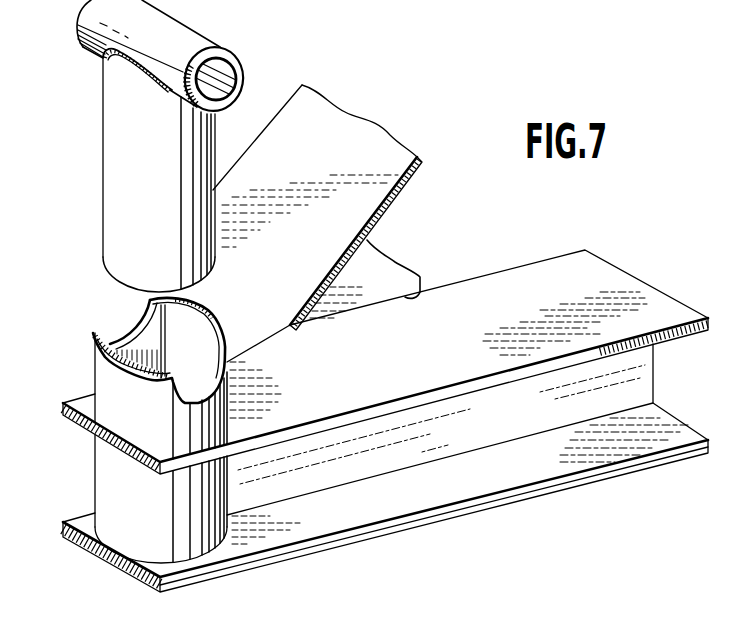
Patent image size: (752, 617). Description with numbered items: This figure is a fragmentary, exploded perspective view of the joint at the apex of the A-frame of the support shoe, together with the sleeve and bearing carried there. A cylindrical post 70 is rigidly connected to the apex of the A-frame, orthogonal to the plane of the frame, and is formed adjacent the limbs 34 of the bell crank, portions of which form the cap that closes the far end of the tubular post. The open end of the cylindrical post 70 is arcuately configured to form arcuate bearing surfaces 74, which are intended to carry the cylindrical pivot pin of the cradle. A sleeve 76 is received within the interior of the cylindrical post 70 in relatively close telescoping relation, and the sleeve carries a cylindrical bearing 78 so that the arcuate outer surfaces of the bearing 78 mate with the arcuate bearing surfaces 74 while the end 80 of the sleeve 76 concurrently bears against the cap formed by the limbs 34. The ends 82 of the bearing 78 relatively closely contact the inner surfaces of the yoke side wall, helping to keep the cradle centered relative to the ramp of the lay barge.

The limbs 34 is at (323, 142).
The cylindrical post 70 is at (136, 512).
The arcuate bearing surfaces 74 is at (131, 338).
The sleeve 76 is at (151, 173).
The bearing 78 is at (171, 38).
The end 80 is at (195, 277).
The ends 82 is at (77, 20).